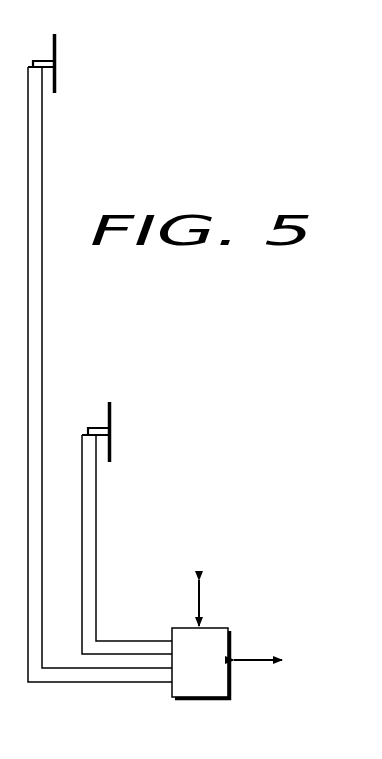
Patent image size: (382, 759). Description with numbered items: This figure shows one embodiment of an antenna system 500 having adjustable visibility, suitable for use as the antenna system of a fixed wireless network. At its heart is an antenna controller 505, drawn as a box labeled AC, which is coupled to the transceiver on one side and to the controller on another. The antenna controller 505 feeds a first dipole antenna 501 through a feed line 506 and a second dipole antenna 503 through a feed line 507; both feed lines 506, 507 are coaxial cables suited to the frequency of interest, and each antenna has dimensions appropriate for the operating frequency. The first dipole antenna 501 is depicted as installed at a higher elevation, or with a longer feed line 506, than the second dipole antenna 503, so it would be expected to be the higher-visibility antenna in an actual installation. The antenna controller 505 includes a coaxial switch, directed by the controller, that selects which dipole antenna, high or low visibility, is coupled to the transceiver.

The antenna system 500 is at (274, 298).
The first dipole antenna 501 is at (57, 50).
The second dipole antenna 503 is at (112, 416).
The antenna controller 505 is at (228, 627).
The feed line 506 is at (43, 171).
The feed line 507 is at (97, 496).